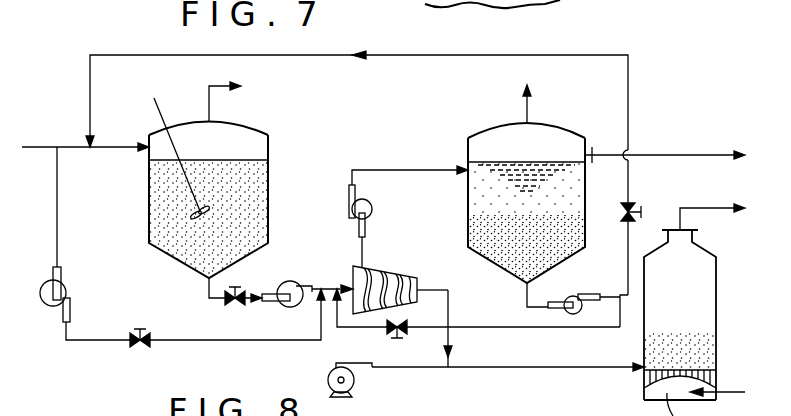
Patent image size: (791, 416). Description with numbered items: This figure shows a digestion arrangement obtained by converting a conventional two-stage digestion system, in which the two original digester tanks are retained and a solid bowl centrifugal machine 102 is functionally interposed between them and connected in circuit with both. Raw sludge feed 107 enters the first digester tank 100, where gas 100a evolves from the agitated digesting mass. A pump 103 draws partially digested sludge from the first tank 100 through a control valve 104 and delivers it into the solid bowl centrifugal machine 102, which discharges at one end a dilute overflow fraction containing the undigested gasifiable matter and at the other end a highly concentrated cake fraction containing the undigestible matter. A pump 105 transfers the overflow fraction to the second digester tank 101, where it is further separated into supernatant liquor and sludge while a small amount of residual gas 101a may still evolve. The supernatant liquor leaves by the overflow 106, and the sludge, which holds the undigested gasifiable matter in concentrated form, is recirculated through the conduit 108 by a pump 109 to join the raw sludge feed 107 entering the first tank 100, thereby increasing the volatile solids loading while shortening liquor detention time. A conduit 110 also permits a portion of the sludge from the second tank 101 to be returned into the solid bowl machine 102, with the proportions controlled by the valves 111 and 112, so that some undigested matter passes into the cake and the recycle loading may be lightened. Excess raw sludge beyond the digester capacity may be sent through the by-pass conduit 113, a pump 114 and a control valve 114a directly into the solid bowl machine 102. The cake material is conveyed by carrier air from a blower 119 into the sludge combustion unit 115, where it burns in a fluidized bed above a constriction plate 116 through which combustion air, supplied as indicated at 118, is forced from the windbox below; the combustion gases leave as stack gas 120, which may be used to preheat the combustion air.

The first digester tank 100 is at (268, 199).
The gas 100a is at (209, 106).
The second digester tank 101 is at (468, 219).
The residual gas 101a is at (529, 108).
The solid bowl centrifugal machine 102 is at (398, 274).
The pump 103 is at (288, 282).
The control valve 104 is at (230, 303).
The pump 105 is at (371, 213).
The overflow 106 is at (655, 155).
The raw sludge feed 107 is at (36, 146).
The conduit 108 is at (405, 55).
The pump 109 is at (579, 296).
The conduit 110 is at (519, 328).
The valve 111 is at (632, 205).
The valve 112 is at (385, 327).
The by-pass conduit 113 is at (192, 340).
The pump 114 is at (66, 291).
The control valve 114a is at (147, 332).
The sludge combustion unit 115 is at (717, 305).
The constriction plate 116 is at (645, 387).
The combustion air supply 118 is at (718, 389).
The blower 119 is at (354, 382).
The stack gas 120 is at (698, 207).